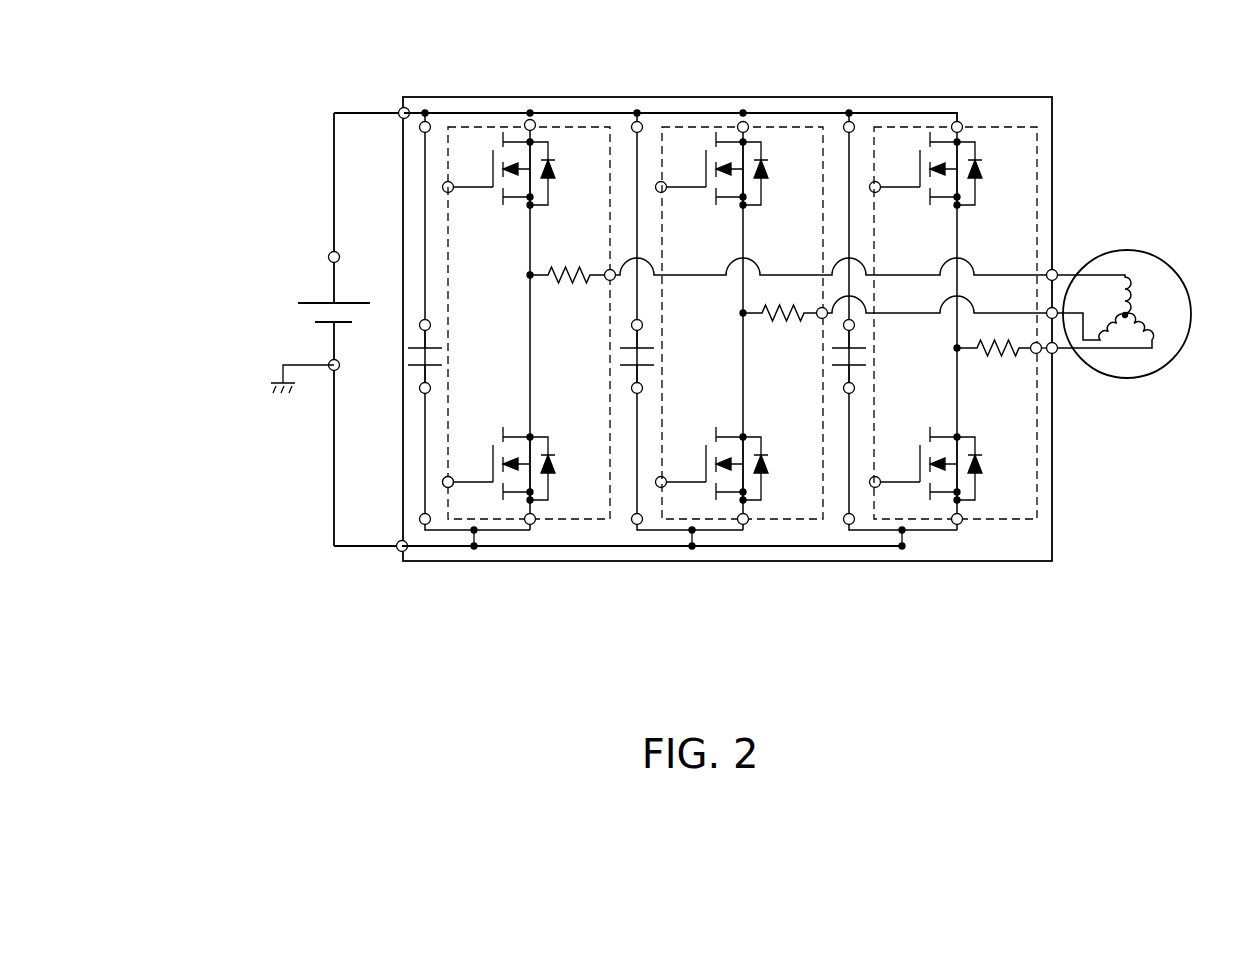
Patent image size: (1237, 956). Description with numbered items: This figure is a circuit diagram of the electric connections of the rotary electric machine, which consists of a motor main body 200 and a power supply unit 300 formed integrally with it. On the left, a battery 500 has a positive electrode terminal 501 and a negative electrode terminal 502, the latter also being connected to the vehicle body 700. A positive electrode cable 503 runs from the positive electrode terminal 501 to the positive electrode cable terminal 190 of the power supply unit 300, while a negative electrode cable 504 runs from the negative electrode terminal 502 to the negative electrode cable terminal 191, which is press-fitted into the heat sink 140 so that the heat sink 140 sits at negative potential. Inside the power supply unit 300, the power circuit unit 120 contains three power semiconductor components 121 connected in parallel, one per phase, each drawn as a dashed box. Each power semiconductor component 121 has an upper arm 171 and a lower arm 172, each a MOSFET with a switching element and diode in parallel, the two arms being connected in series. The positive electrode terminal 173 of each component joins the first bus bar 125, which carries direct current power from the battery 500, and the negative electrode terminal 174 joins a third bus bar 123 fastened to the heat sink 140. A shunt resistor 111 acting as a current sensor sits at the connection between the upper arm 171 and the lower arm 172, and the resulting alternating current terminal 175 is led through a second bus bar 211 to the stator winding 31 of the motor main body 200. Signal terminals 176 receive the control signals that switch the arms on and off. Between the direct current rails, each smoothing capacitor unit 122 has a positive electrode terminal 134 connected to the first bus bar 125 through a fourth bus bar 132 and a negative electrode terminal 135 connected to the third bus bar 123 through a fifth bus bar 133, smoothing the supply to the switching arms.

The stator winding 31 is at (1133, 297).
The shunt resistor 111 is at (570, 262).
The power circuit unit 120 is at (690, 113).
The power semiconductor component 121 is at (740, 122).
The smoothing capacitor unit 122 is at (832, 382).
The third bus bar 123 is at (705, 534).
The first bus bar 125 is at (648, 113).
The fourth bus bar 132 is at (851, 155).
The fifth bus bar 133 is at (850, 505).
The positive electrode terminal of the smoothing capacitor unit 134 is at (846, 319).
The negative electrode terminal of the smoothing capacitor unit 135 is at (845, 393).
The heat sink 140 is at (635, 547).
The upper arm 171 is at (493, 150).
The lower arm 172 is at (508, 504).
The positive electrode terminal 173 is at (530, 119).
The negative electrode terminal 174 is at (532, 525).
The alternating current terminal 175 is at (608, 281).
The signal terminal 176 is at (449, 488).
The positive electrode cable terminal 190 is at (404, 108).
The negative electrode cable terminal 191 is at (400, 552).
The motor main body 200 is at (1162, 225).
The second bus bar 211 is at (1012, 275).
The power supply unit 300 is at (960, 97).
The battery 500 is at (298, 322).
The positive electrode terminal of the battery 501 is at (330, 253).
The negative electrode terminal of the battery 502 is at (331, 370).
The positive electrode cable 503 is at (349, 113).
The negative electrode cable 504 is at (348, 547).
The vehicle body 700 is at (275, 388).